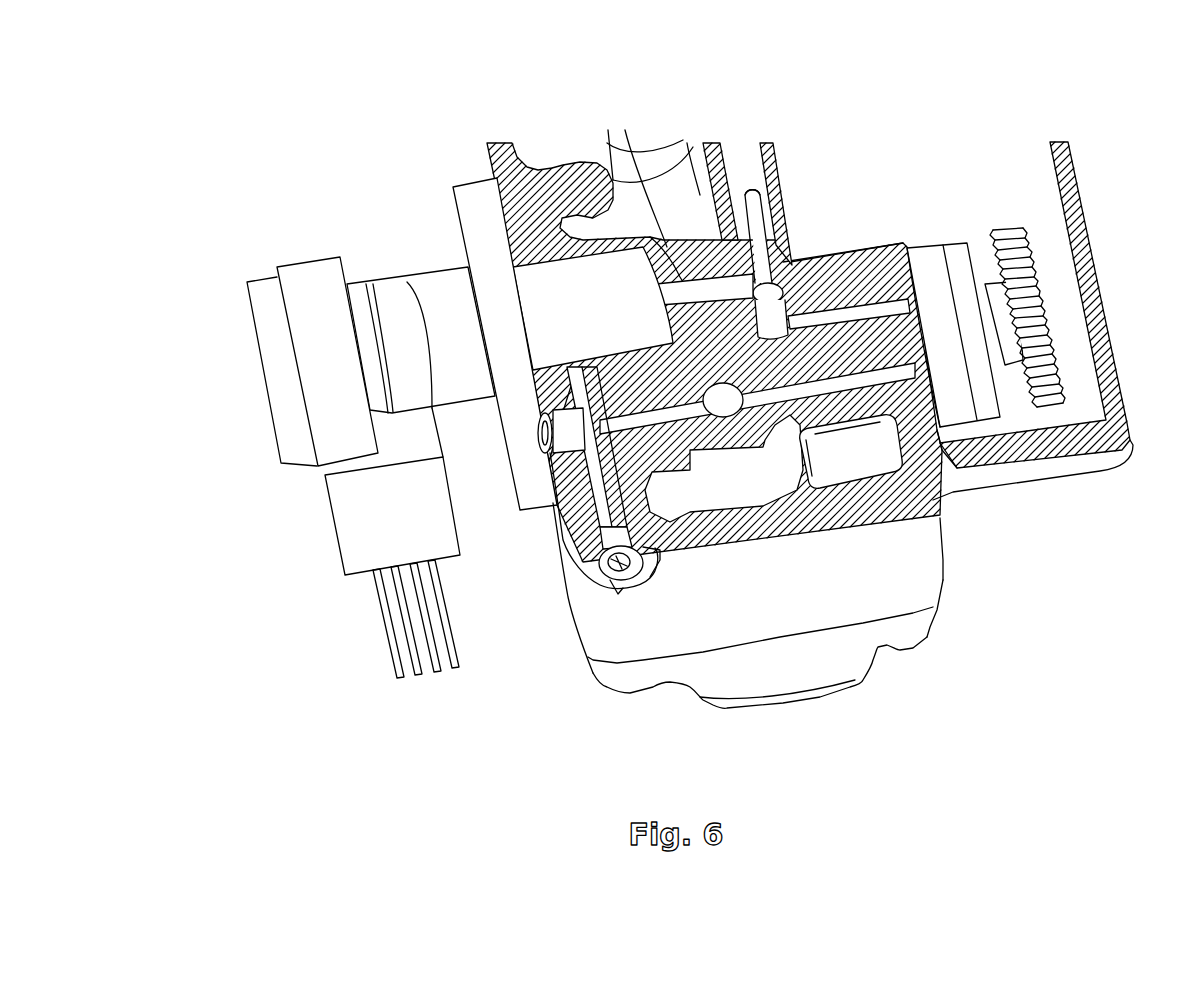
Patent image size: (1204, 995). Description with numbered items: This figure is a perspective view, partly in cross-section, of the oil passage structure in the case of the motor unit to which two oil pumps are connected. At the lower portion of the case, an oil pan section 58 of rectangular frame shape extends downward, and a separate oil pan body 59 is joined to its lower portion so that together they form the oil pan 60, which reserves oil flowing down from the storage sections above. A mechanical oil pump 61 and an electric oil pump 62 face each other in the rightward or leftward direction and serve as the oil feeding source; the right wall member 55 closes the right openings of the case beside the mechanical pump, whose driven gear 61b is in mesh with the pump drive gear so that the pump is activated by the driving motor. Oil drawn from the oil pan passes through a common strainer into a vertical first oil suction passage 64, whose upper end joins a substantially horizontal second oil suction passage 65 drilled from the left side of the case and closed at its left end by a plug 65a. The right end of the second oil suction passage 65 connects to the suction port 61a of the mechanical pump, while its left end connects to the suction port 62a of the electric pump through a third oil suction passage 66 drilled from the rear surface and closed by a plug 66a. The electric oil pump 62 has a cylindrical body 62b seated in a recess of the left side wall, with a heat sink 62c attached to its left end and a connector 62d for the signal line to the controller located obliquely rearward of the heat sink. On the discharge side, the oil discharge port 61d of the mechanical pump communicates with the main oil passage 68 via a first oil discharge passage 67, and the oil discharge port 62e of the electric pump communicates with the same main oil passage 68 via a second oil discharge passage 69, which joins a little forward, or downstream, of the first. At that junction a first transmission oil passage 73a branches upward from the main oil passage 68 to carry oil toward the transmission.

The right wall member 55 is at (1093, 247).
The oil pan section 58 is at (917, 565).
The oil pan body 59 is at (913, 633).
The oil pan 60 is at (840, 636).
The mechanical oil pump 61 is at (935, 245).
The suction port 61a is at (953, 490).
The driven gear 61b is at (1005, 228).
The oil discharge port 61d is at (880, 258).
The electric oil pump 62 is at (278, 459).
The suction port 62a is at (570, 283).
The cylindrical body 62b is at (507, 248).
The heat sink 62c is at (270, 388).
The connector 62d is at (348, 520).
The oil discharge port 62e is at (633, 157).
The first oil suction passage 64 is at (750, 405).
The second oil suction passage 65 is at (686, 555).
The plug 65a is at (540, 438).
The third oil suction passage 66 is at (592, 506).
The plug 66a is at (615, 588).
The first oil discharge passage 67 is at (860, 250).
The main oil passage 68 is at (762, 185).
The second oil discharge passage 69 is at (697, 277).
The first transmission oil passage 73a is at (750, 200).